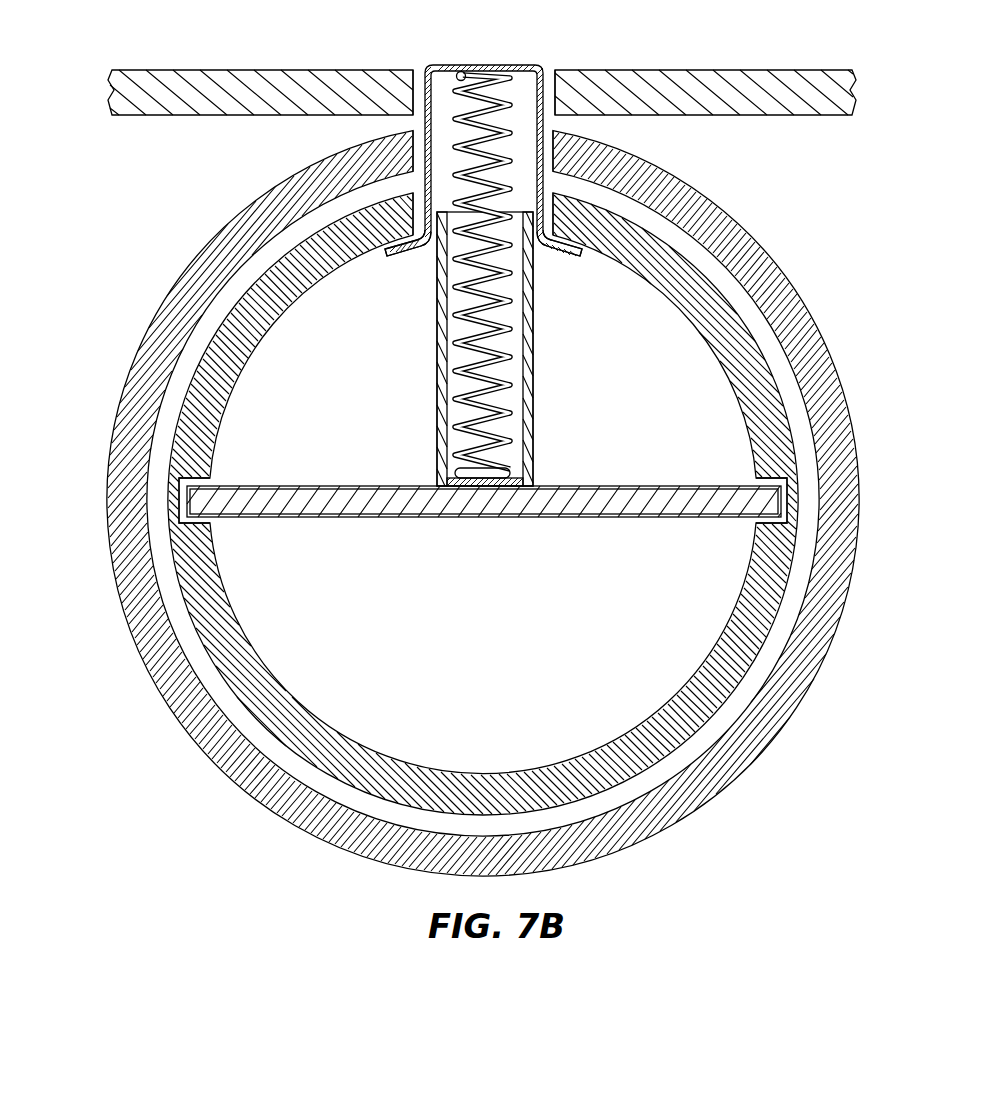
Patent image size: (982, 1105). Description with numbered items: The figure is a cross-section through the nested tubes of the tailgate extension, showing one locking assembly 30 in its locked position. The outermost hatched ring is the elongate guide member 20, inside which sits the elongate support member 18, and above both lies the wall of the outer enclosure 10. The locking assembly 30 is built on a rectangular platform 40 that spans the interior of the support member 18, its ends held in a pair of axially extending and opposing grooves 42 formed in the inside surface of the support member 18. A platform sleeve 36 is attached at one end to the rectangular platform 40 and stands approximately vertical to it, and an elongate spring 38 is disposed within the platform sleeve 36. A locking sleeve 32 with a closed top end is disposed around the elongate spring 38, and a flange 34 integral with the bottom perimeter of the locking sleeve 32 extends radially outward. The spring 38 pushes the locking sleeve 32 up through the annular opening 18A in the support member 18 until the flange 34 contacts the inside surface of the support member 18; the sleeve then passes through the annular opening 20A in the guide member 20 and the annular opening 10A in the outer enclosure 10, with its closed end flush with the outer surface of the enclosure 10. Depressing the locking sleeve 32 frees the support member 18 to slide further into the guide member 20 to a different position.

The outer enclosure 10 is at (244, 70).
The annular opening 10A is at (419, 64).
The elongate support member 18 is at (250, 348).
The annular opening 18A is at (420, 238).
The elongate guide member 20 is at (285, 180).
The annular opening 20A is at (413, 130).
The locking assembly 30 is at (434, 369).
The locking sleeve 32 is at (498, 64).
The flange 34 is at (403, 253).
The platform sleeve 36 is at (533, 358).
The elongate spring 38 is at (466, 72).
The rectangular platform 40 is at (600, 486).
The groove 42 is at (205, 518).